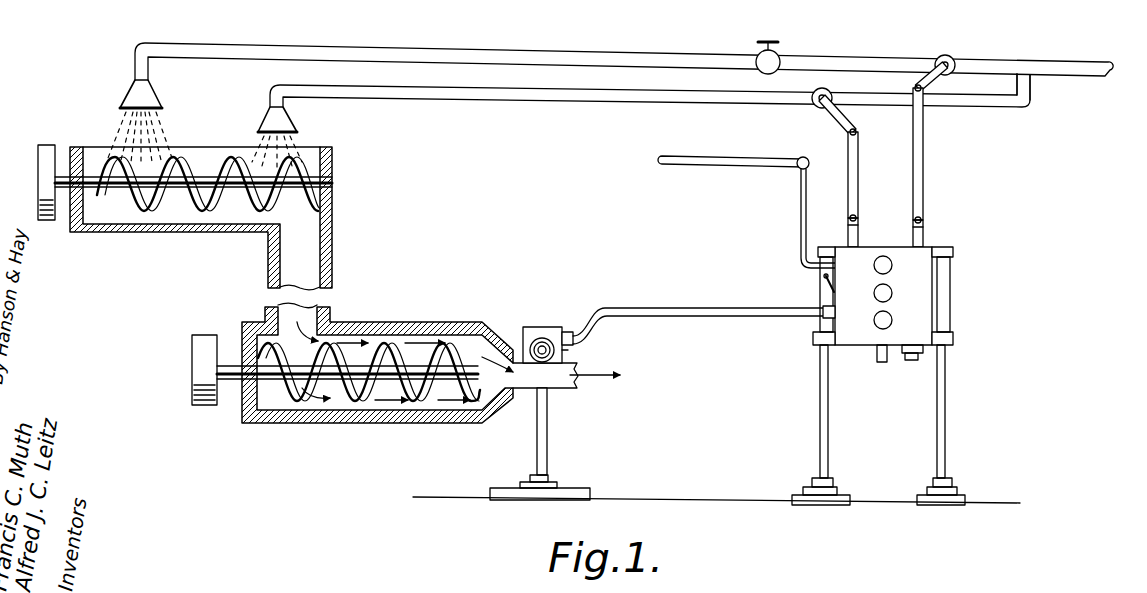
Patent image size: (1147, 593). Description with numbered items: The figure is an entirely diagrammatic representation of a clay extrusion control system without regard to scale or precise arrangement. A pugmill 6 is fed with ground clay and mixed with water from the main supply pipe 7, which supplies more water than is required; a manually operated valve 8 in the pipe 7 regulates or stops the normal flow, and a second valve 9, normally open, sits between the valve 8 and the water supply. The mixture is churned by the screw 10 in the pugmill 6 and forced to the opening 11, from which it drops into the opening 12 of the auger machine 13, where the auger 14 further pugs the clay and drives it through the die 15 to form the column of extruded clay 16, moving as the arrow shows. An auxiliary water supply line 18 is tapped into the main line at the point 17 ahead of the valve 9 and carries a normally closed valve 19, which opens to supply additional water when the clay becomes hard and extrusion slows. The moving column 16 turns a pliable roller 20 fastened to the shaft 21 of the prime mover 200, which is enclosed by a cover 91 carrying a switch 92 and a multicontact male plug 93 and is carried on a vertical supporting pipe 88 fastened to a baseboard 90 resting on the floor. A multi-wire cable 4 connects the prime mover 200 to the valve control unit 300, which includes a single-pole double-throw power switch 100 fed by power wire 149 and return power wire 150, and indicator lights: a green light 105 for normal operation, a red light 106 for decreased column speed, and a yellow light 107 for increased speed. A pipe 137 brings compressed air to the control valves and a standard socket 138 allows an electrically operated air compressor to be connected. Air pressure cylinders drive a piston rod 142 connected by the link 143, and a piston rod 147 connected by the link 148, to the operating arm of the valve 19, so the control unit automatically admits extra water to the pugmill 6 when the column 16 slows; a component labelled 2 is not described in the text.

The valve 2 is at (531, 327).
The multi-wire cable 4 is at (705, 308).
The pugmill 6 is at (170, 234).
The main supply pipe 7 is at (223, 47).
The manually operated valve 8 is at (777, 50).
The second valve 9 is at (952, 57).
The screw 10 is at (190, 157).
The opening 11 is at (303, 283).
The opening 12 is at (310, 307).
The auger machine 13 is at (400, 322).
The auger 14 is at (343, 395).
The die 15 is at (510, 405).
The column of extruded clay 16 is at (558, 389).
The point 17 is at (1031, 80).
The auxiliary water supply line 18 is at (334, 96).
The valve 19 is at (812, 109).
The roller 20 is at (530, 343).
The shaft 21 is at (539, 365).
The vertical supporting pipe 88 is at (548, 444).
The baseboard 90 is at (585, 488).
The cover 91 is at (535, 347).
The single-pole single-throw switch 92 is at (566, 352).
The multicontact male plug 93 is at (572, 333).
The single-pole double-throw power switch 100 is at (824, 284).
The green light 105 is at (865, 292).
The red light 106 is at (874, 265).
The yellow light 107 is at (865, 319).
The pipe 137 is at (876, 355).
The standard socket 138 is at (912, 361).
The piston rod 142 is at (848, 230).
The link 143 is at (850, 181).
The piston rod 147 is at (923, 238).
The link 148 is at (923, 165).
The power wire 149 is at (712, 158).
The return power wire 150 is at (703, 168).
The prime mover 200 is at (549, 329).
The valve control unit 300 is at (953, 291).